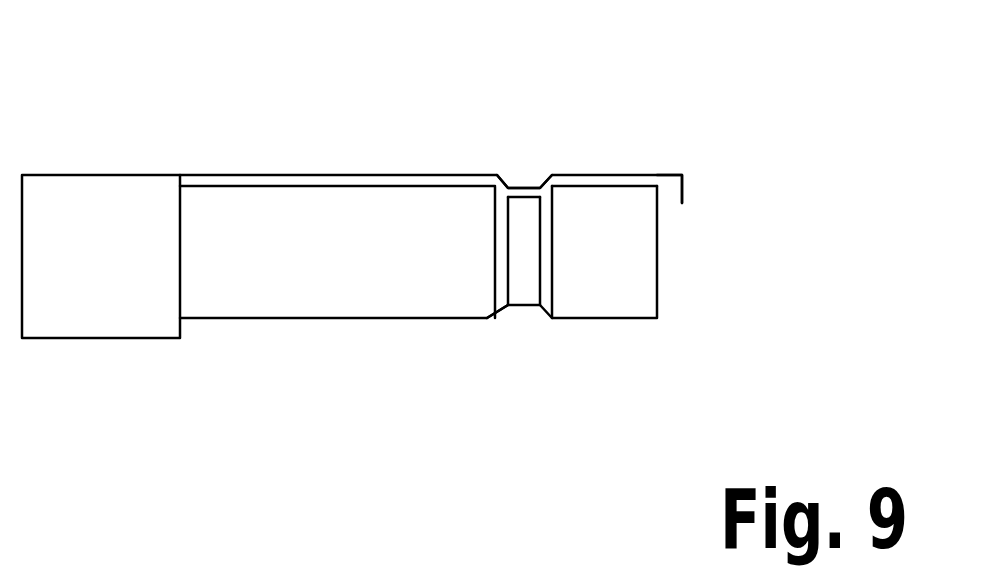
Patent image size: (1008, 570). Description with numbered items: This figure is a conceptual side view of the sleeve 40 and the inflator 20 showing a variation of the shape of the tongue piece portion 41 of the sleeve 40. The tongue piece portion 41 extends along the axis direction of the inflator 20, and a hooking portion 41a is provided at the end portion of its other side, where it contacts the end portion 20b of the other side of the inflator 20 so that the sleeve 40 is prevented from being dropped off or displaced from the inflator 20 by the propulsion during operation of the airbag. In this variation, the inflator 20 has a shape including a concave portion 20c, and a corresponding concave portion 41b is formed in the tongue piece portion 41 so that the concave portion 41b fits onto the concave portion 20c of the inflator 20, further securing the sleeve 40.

The sleeve 40 is at (125, 157).
The tongue piece portion 41 is at (445, 155).
The hooking portion 41a is at (682, 187).
The concave portion 41b is at (545, 178).
The inflator 20 is at (377, 320).
The end portion 20b is at (657, 293).
The concave portion 20c is at (528, 293).